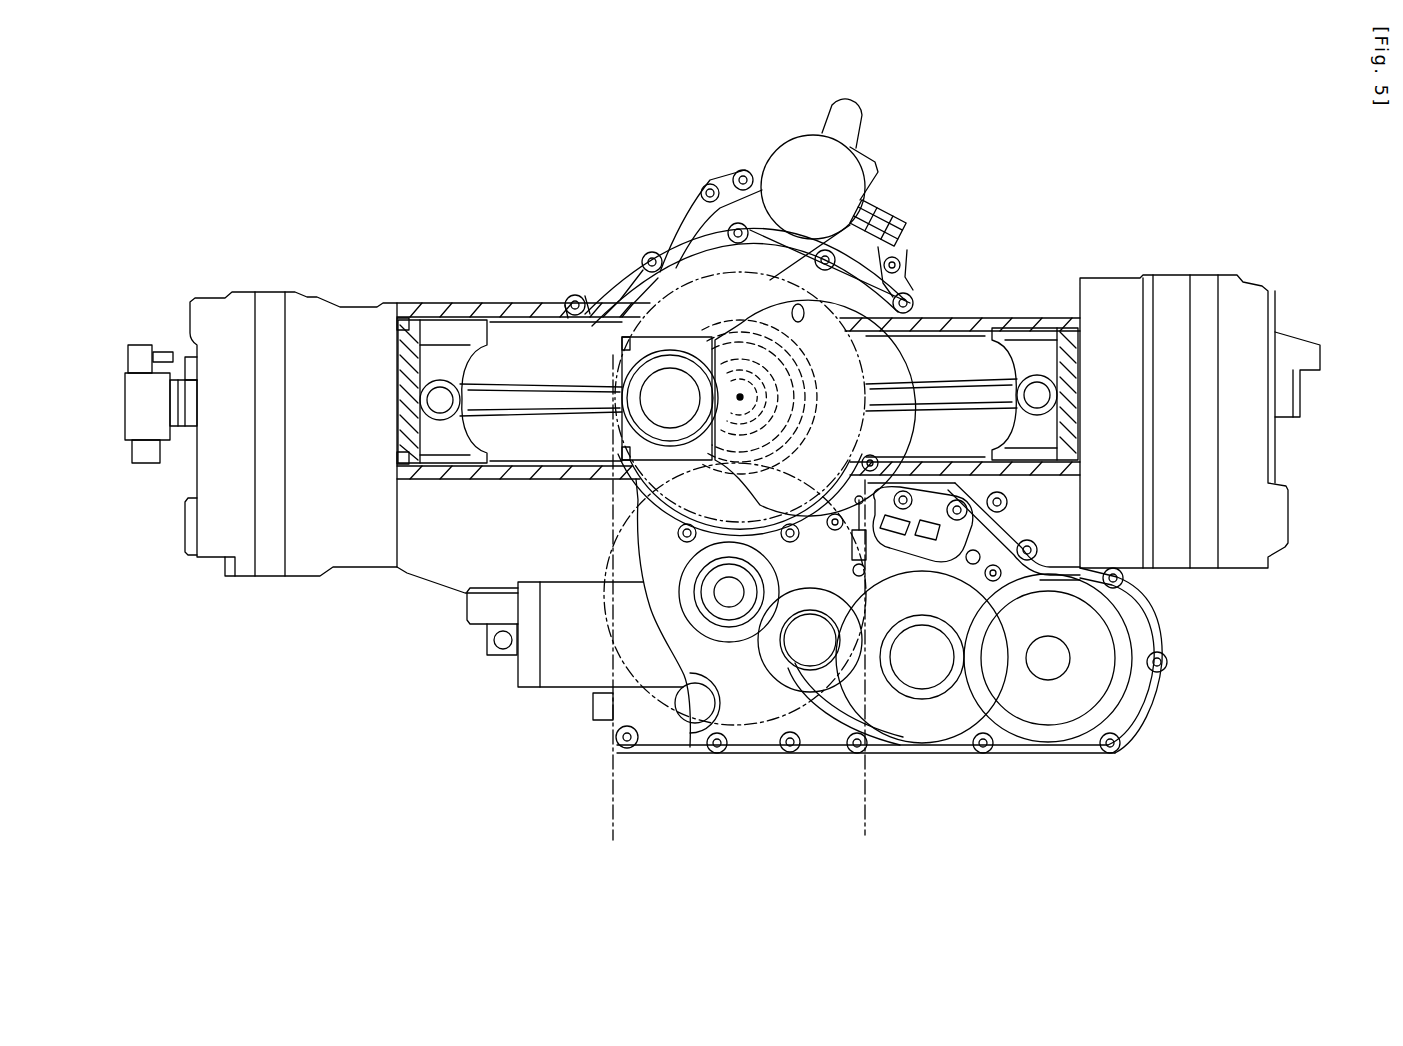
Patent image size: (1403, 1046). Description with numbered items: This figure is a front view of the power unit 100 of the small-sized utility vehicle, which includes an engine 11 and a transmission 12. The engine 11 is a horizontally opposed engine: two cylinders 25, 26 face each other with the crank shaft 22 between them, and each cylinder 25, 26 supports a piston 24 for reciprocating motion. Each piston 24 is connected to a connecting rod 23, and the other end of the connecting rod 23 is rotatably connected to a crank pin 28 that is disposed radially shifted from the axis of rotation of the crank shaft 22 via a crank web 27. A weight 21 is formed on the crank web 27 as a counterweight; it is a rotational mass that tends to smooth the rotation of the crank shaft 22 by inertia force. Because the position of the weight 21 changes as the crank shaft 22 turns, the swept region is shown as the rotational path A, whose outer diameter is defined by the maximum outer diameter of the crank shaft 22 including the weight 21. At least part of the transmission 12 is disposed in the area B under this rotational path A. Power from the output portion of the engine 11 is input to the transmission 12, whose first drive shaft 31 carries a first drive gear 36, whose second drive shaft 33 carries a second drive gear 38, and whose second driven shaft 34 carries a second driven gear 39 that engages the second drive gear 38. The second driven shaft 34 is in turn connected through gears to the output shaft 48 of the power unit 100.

The power unit 100 is at (909, 184).
The engine 11 is at (587, 240).
The transmission 12 is at (812, 751).
The weight 21 is at (883, 292).
The crank shaft 22 is at (757, 330).
The connecting rod 23 is at (516, 425).
The piston 24 is at (478, 318).
The cylinder 25 is at (532, 318).
The cylinder 26 is at (974, 378).
The crank web 27 is at (750, 312).
The crank pin 28 is at (667, 380).
The first drive shaft 31 is at (688, 675).
The second drive shaft 33 is at (806, 650).
The second driven shaft 34 is at (925, 678).
The first drive gear 36 is at (728, 598).
The second drive gear 38 is at (877, 667).
The second driven gear 39 is at (905, 745).
The output shaft 48 is at (1050, 670).
The rotational path A is at (727, 275).
The area B is at (612, 775).